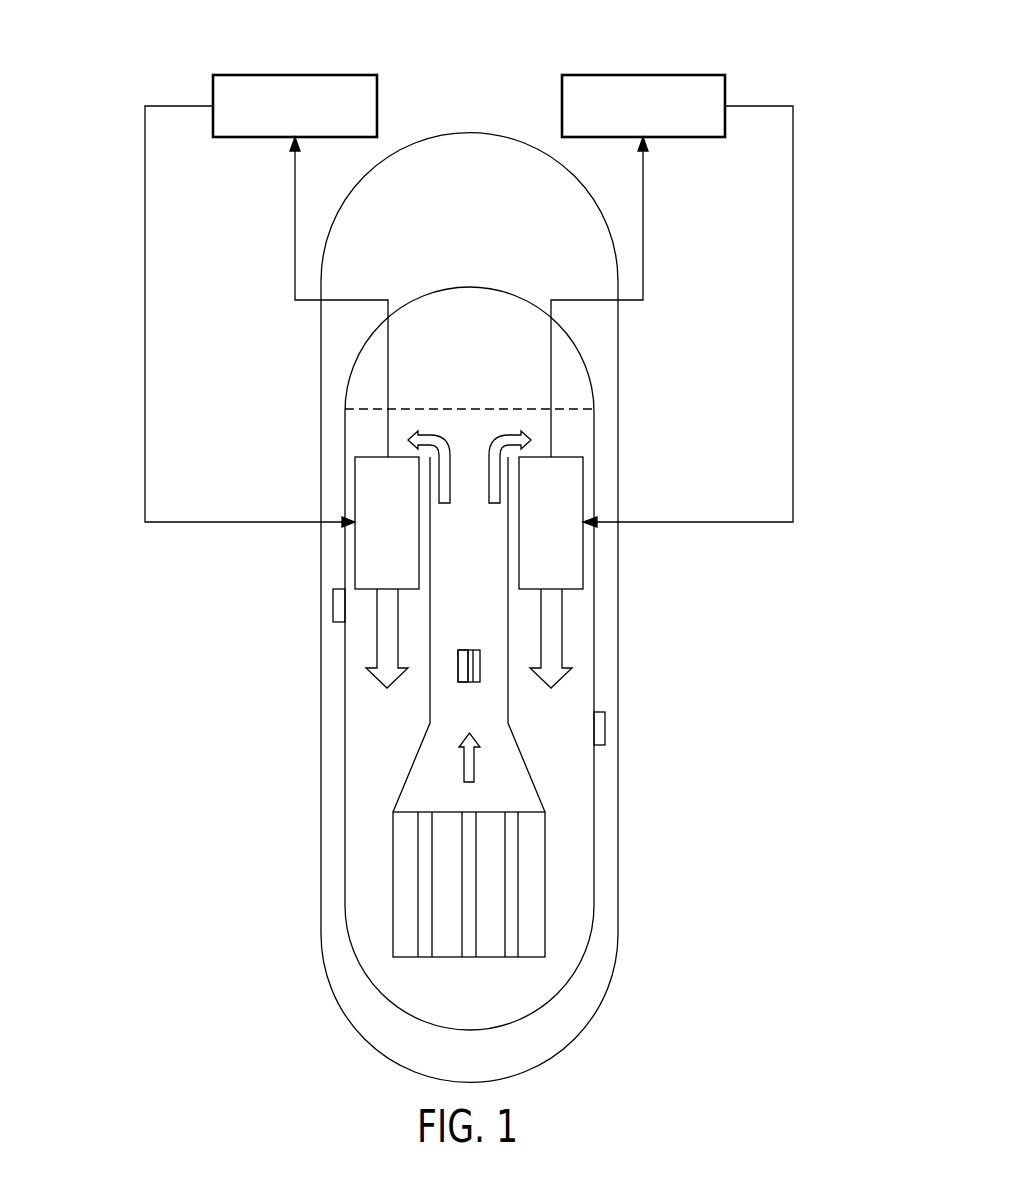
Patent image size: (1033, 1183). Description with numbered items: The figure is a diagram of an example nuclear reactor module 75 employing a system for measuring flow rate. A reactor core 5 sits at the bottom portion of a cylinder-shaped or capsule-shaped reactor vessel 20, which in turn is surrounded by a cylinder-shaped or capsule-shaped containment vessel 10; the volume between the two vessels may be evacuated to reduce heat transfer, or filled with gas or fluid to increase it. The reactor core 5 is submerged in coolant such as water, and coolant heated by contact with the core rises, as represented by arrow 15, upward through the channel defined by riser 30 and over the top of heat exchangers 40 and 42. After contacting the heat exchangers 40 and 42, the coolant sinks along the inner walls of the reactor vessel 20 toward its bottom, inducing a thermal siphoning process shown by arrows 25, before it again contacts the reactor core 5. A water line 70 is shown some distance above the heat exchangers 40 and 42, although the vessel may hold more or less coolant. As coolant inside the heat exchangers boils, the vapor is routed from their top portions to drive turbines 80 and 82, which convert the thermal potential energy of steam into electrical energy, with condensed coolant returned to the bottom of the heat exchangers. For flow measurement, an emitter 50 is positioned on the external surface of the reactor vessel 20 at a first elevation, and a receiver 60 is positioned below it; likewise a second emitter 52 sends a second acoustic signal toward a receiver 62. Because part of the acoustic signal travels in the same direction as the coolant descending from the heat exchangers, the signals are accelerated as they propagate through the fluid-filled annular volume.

The reactor core 5 is at (545, 883).
The containment vessel 10 is at (320, 934).
The arrow 15 is at (476, 763).
The reactor vessel 20 is at (345, 877).
The arrows 25 is at (541, 628).
The riser 30 is at (508, 705).
The heat exchanger 40 is at (355, 479).
The heat exchanger 42 is at (583, 479).
The emitter 50 is at (333, 605).
The emitter 52 is at (480, 664).
The receiver 60 is at (458, 671).
The receiver 62 is at (605, 730).
The water line 70 is at (471, 408).
The nuclear reactor module 75 is at (507, 72).
The turbine 80 is at (295, 75).
The turbine 82 is at (643, 75).